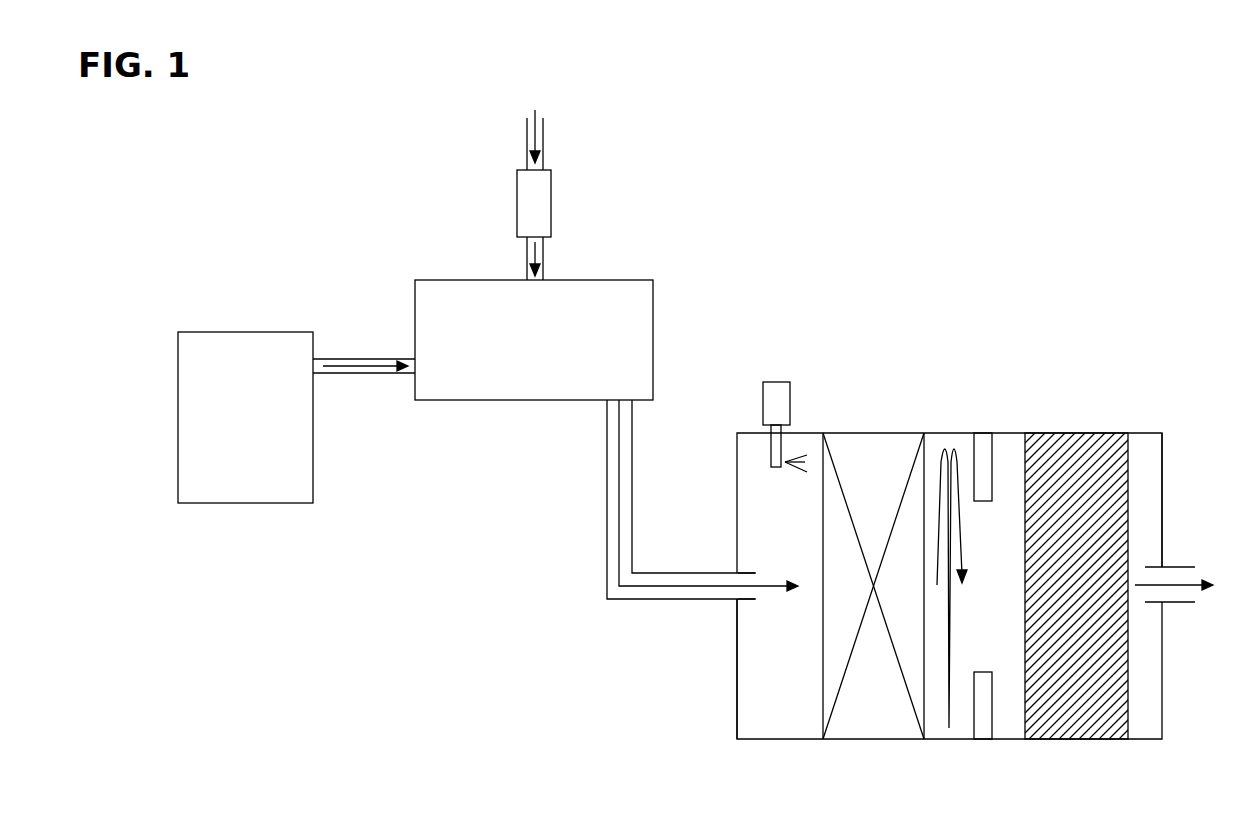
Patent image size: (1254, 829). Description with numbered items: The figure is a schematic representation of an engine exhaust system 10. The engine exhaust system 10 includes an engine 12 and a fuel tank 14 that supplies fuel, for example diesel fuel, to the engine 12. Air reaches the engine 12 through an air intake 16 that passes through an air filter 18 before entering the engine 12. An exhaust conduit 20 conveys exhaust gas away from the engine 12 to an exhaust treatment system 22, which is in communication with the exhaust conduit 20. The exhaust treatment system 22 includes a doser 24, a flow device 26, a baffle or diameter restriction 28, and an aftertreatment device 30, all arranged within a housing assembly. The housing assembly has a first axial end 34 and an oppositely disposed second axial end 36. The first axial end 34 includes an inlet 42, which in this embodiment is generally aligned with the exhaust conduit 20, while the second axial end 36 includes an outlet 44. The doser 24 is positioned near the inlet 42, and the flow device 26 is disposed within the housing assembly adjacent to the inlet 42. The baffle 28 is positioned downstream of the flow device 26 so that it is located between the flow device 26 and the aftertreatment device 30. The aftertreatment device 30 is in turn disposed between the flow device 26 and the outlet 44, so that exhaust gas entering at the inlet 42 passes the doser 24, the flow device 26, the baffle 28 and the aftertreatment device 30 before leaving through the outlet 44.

The engine exhaust system 10 is at (198, 202).
The engine 12 is at (620, 280).
The fuel tank 14 is at (255, 332).
The air intake 16 is at (542, 132).
The air filter 18 is at (551, 198).
The exhaust conduit 20 is at (607, 507).
The exhaust treatment system 22 is at (1007, 396).
The doser 24 is at (790, 395).
The flow device 26 is at (851, 472).
The baffle 28 is at (974, 717).
The aftertreatment device 30 is at (1067, 725).
The first axial end 34 is at (737, 667).
The second axial end 36 is at (1162, 495).
The inlet 42 is at (738, 573).
The outlet 44 is at (1162, 602).